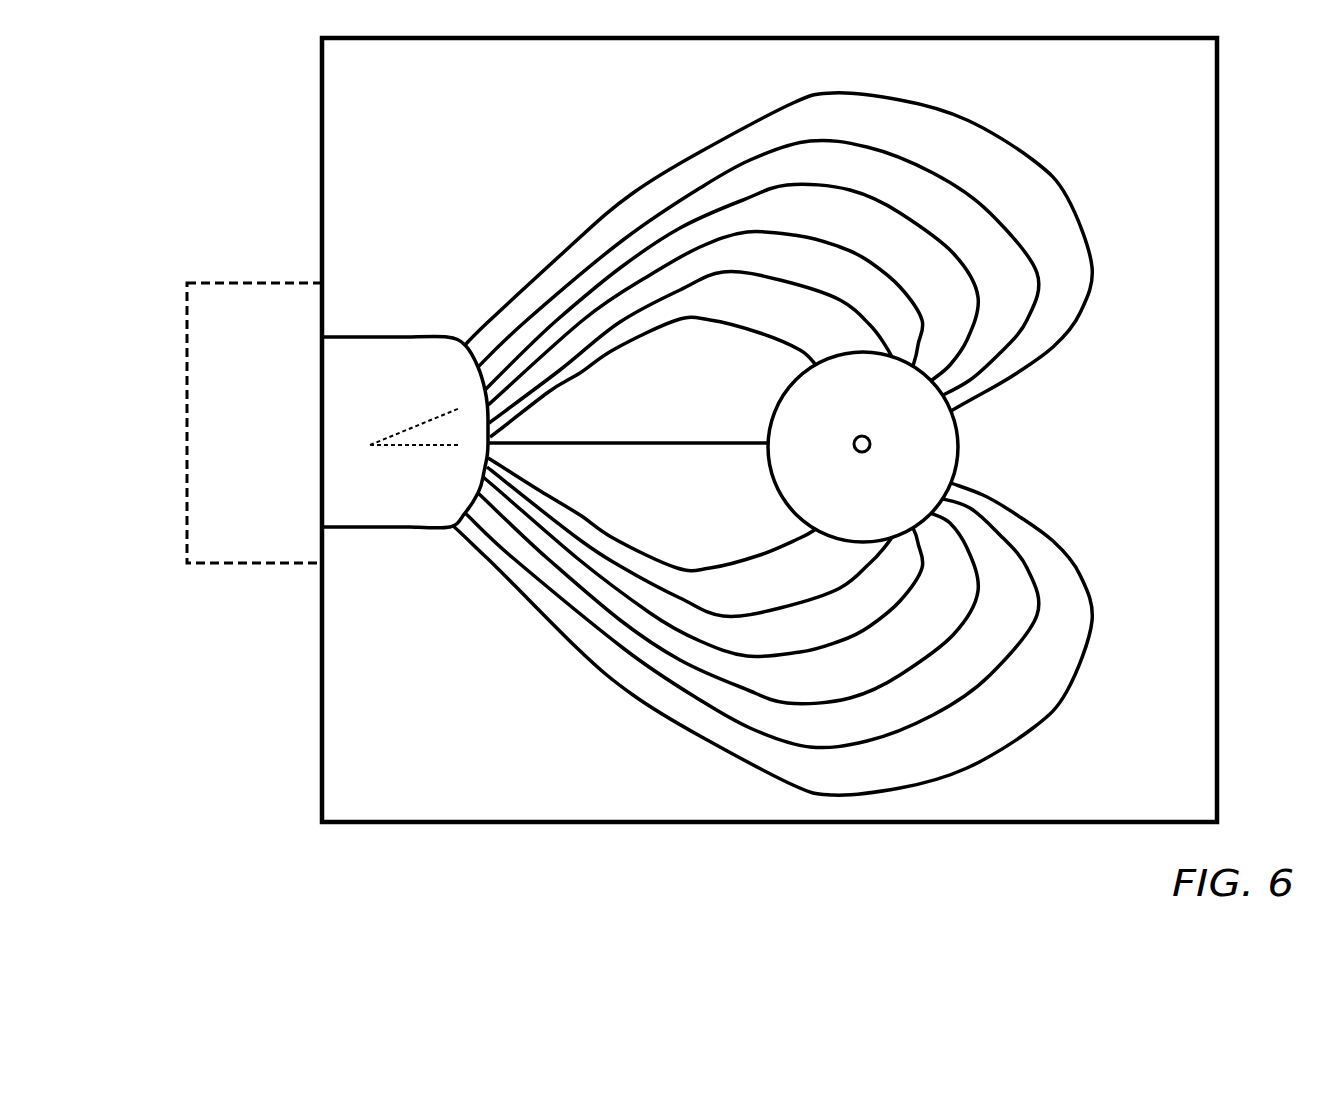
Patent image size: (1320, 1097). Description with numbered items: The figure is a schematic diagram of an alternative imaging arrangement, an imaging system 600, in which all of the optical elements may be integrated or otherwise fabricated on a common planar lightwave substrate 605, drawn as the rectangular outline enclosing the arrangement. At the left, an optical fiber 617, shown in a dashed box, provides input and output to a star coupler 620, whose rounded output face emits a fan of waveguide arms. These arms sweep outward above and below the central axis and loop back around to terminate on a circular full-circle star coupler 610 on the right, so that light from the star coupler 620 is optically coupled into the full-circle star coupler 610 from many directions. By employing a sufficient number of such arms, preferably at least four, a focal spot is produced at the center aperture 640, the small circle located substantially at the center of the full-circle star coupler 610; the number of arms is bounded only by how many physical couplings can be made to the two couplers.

The imaging system 600 is at (1130, 26).
The planar lightwave substrate 605 is at (1218, 152).
The 360° star coupler 610 is at (958, 456).
The optical fiber 617 is at (254, 423).
The star coupler 620 is at (393, 338).
The center aperture 640 is at (857, 452).